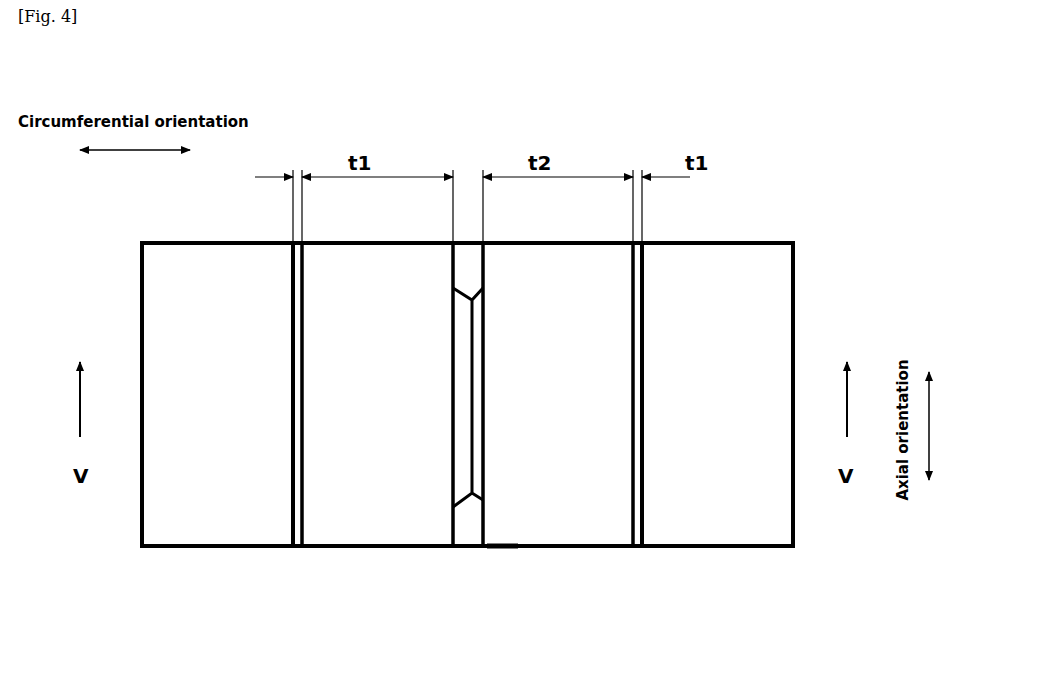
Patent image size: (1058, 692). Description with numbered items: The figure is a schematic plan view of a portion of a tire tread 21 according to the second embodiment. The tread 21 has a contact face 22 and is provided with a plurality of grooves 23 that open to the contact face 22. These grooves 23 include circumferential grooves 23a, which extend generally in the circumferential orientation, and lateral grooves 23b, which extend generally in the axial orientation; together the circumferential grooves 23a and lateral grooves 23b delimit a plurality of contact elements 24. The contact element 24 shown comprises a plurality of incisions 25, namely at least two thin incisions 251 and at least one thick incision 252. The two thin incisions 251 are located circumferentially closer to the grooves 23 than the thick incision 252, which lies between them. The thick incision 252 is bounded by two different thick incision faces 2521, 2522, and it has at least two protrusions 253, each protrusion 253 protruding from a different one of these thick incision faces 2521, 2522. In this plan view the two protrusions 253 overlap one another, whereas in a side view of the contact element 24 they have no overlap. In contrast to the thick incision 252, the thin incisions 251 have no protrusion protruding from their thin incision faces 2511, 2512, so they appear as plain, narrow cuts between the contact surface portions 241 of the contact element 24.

The tread 21 is at (578, 138).
The contact face 22 is at (680, 535).
The grooves 23 is at (463, 395).
The circumferential grooves 23a is at (212, 555).
The lateral grooves 23b is at (127, 315).
The contact element 24 is at (383, 550).
The block outer surface 241 is at (467, 320).
The incisions 25 is at (466, 441).
The thin incisions 251 is at (466, 441).
The thick incision 252 is at (467, 439).
The thin incision face 2511 is at (293, 262).
The thin incision face 2512 is at (303, 306).
The thick incision face 2521 is at (455, 265).
The thick incision face 2522 is at (486, 272).
The protrusions 253 is at (463, 463).